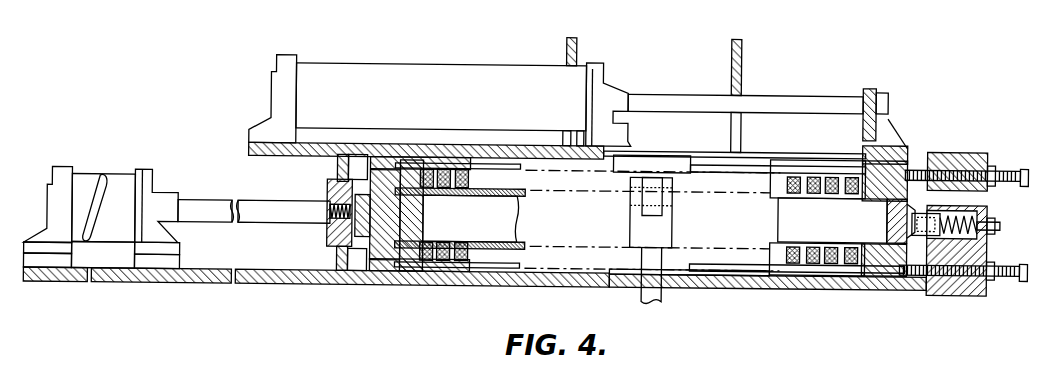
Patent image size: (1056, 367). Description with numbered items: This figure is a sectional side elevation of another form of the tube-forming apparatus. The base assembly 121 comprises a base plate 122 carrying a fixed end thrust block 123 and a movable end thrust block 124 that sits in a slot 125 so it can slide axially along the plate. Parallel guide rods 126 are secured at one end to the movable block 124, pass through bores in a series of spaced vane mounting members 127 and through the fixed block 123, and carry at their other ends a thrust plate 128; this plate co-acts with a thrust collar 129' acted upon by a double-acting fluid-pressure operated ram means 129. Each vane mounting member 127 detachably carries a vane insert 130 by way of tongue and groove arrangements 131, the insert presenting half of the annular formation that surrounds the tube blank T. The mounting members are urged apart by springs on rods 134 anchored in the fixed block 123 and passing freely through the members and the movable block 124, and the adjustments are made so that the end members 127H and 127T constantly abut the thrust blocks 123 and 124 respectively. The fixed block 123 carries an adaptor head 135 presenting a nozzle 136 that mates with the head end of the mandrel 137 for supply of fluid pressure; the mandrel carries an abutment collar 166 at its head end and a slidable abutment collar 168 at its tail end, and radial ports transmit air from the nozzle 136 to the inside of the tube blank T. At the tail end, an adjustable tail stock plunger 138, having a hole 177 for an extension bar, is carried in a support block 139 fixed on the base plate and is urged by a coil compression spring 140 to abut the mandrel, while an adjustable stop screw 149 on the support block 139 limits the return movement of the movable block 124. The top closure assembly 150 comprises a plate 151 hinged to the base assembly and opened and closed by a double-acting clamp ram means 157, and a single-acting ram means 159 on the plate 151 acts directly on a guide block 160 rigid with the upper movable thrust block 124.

The base assembly 121 is at (310, 287).
The base plate 122 is at (258, 287).
The end thrust block 123 is at (392, 157).
The end thrust block 124 is at (893, 157).
The slot 125 is at (848, 270).
The guide rods 126 is at (375, 157).
The vane mounting members 127 is at (848, 172).
The head end vane mounting member 127H is at (440, 163).
The tail end vane mounting member 127T is at (862, 160).
The thrust plate 128 is at (335, 172).
The double-acting fluid-pressure operated ram means 129 is at (176, 218).
The thrust collar 129' is at (317, 217).
The vane insert 130 is at (470, 258).
The tongue and groove arrangements 131 is at (440, 258).
The rods 134 is at (780, 163).
The adaptor head 135 is at (365, 240).
The nozzle 136 is at (385, 260).
The mandrel 137 is at (525, 241).
The adjustable tail stock plunger 138 is at (990, 224).
The support block 139 is at (965, 254).
The coil compression spring 140 is at (977, 210).
The adjustable stop screw 149 is at (1024, 164).
The top closure assembly 150 is at (275, 112).
The plate 151 is at (256, 146).
The double-acting fluid-pressure operated clamp ram means 157 is at (662, 298).
The single-acting fluid-pressure operated ram means 159 is at (600, 82).
The guide block 160 is at (888, 93).
The abutment collar 166 is at (440, 207).
The abutment collar 168 is at (897, 168).
The hole 177 is at (858, 219).
The tube blank T is at (525, 198).